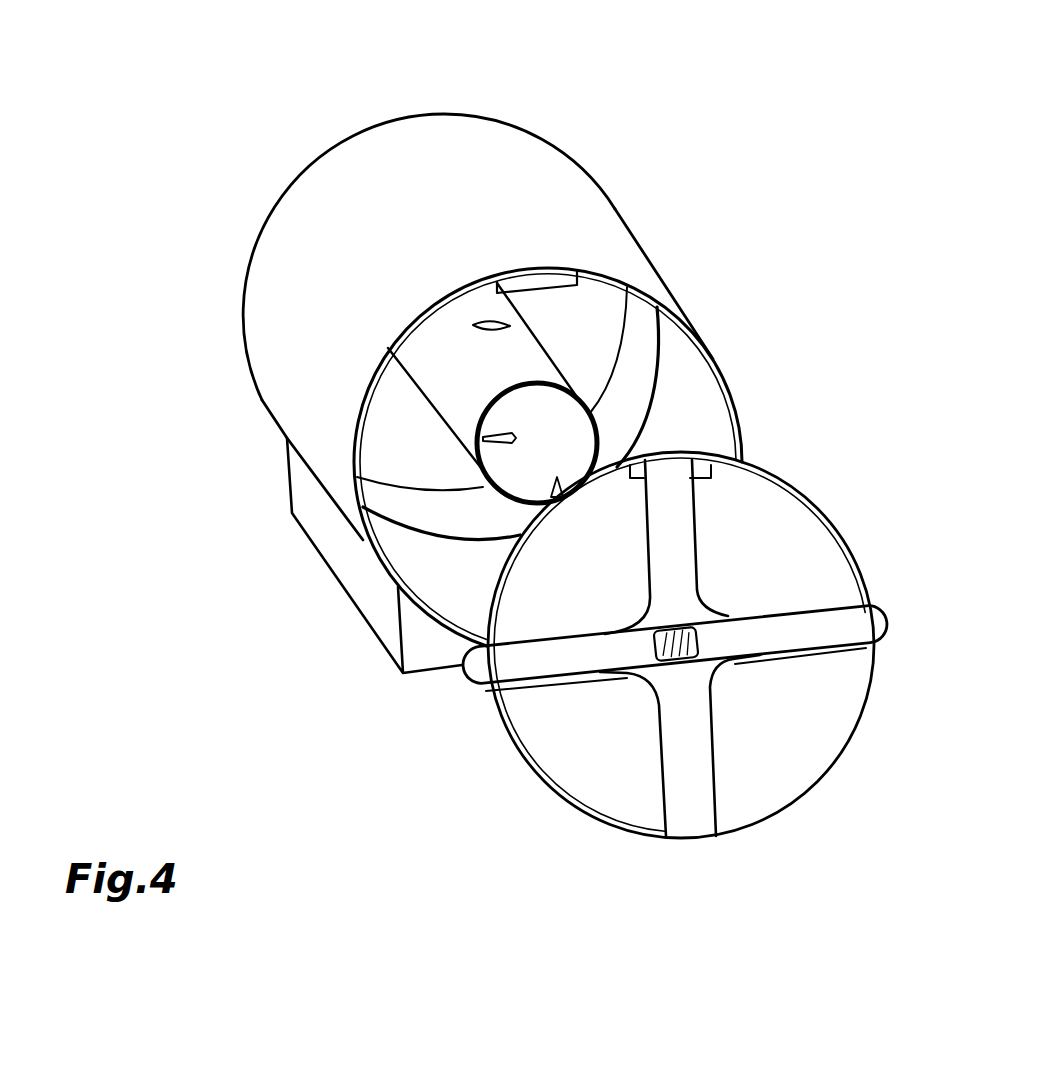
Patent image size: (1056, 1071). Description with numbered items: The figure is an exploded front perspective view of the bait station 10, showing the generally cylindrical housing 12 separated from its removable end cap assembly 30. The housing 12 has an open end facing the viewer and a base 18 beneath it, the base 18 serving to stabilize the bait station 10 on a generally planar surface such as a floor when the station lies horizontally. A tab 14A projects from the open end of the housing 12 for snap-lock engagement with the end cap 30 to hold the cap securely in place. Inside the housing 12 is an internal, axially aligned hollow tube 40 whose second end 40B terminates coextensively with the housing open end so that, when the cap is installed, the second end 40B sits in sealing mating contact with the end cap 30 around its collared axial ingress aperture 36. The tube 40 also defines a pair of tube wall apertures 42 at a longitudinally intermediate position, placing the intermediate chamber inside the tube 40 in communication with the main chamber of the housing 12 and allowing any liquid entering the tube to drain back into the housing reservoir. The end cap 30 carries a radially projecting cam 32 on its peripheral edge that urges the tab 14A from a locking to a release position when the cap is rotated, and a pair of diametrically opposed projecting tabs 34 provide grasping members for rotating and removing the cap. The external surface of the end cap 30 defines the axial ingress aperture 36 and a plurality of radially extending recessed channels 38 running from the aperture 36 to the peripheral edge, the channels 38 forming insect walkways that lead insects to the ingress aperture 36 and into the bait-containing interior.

The bait station 10 is at (736, 145).
The housing 12 is at (372, 282).
The tab 14A is at (520, 268).
The base 18 is at (368, 582).
The end cap assembly 30 is at (823, 484).
The radially projecting cam 32 is at (760, 460).
The projecting tabs 34 is at (888, 622).
The axial ingress aperture 36 is at (688, 657).
The recessed channels 38 is at (545, 667).
The hollow tube 40 is at (520, 357).
The second end of tube 40B is at (465, 434).
The tube wall apertures 42 is at (473, 325).